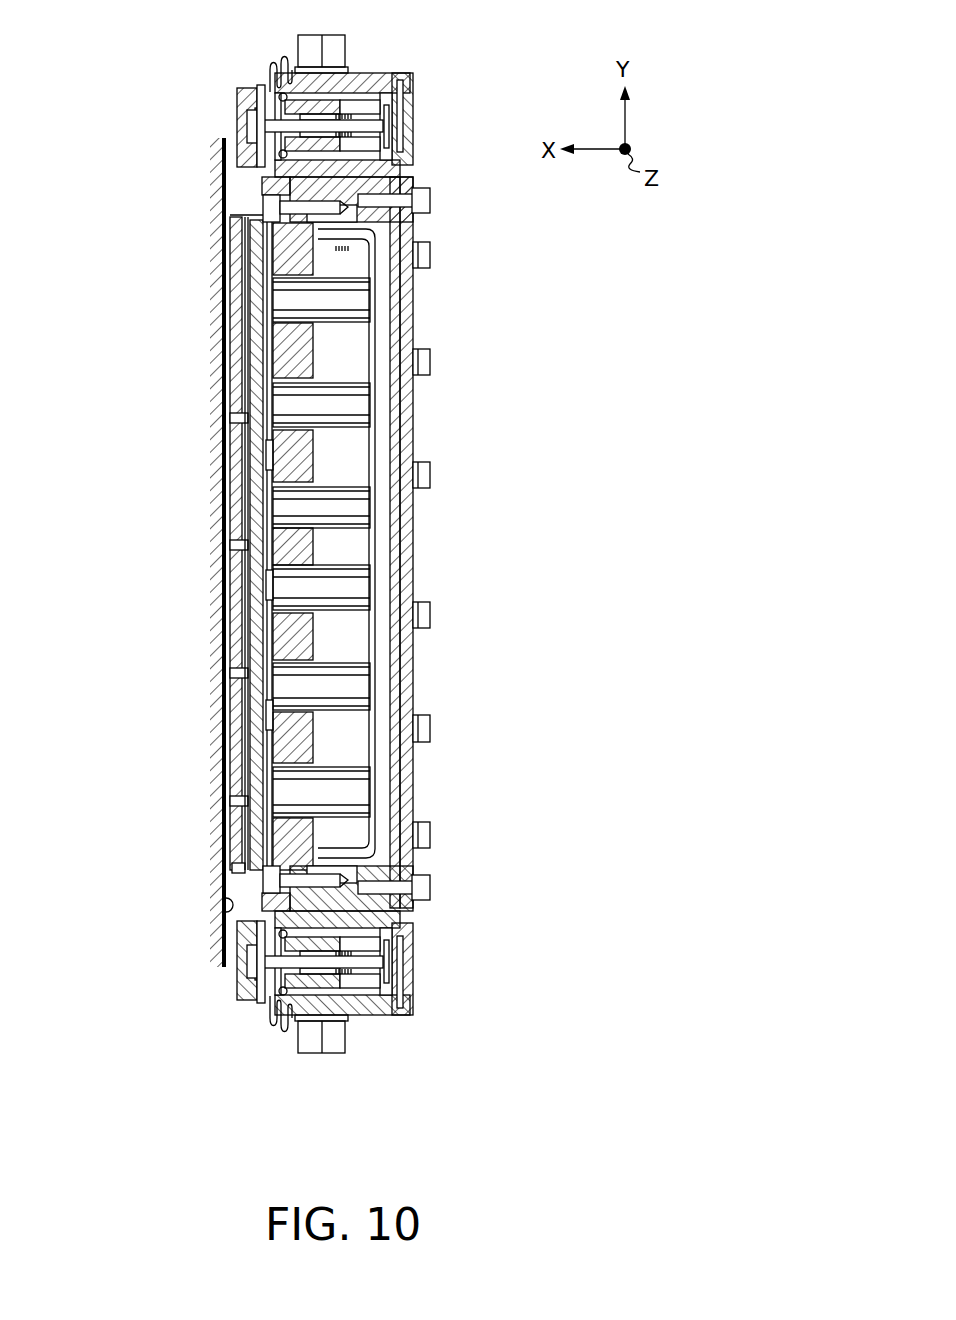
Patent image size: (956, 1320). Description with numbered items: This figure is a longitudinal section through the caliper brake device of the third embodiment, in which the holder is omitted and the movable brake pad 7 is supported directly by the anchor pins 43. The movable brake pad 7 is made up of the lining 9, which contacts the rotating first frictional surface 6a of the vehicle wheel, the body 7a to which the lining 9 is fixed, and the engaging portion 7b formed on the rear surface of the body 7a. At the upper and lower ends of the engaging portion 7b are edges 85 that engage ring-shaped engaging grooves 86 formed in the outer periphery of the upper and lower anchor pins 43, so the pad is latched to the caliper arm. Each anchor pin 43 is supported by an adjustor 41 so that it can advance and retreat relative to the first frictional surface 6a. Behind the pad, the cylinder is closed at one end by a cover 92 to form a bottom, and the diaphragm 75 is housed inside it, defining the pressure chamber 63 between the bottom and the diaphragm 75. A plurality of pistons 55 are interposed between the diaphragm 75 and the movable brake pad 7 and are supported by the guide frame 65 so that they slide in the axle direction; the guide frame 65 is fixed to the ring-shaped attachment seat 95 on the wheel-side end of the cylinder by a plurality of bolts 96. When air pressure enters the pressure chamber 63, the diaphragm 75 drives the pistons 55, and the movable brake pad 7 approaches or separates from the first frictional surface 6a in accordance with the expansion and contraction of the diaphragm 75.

The movable brake pad 7 is at (228, 603).
The body 7a is at (246, 487).
The engaging portion 7b is at (266, 190).
The lining 9 is at (242, 712).
The first frictional surface 6a is at (232, 905).
The adjustor 41 is at (378, 75).
The anchor pin 43 is at (240, 95).
The piston 55 is at (345, 682).
The pressure chamber 63 is at (390, 650).
The guide frame 65 is at (310, 455).
The diaphragm 75 is at (374, 790).
The edge 85 is at (252, 150).
The engaging groove 86 is at (258, 88).
The cover 92 is at (404, 565).
The attachment seat 95 is at (290, 232).
The bolt 96 is at (262, 207).